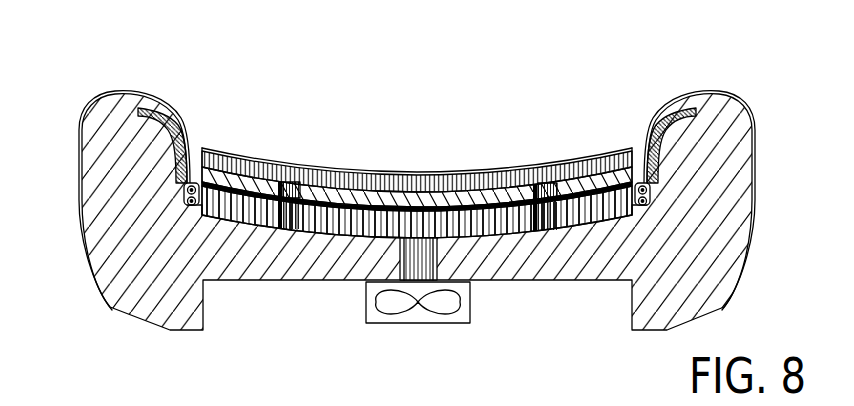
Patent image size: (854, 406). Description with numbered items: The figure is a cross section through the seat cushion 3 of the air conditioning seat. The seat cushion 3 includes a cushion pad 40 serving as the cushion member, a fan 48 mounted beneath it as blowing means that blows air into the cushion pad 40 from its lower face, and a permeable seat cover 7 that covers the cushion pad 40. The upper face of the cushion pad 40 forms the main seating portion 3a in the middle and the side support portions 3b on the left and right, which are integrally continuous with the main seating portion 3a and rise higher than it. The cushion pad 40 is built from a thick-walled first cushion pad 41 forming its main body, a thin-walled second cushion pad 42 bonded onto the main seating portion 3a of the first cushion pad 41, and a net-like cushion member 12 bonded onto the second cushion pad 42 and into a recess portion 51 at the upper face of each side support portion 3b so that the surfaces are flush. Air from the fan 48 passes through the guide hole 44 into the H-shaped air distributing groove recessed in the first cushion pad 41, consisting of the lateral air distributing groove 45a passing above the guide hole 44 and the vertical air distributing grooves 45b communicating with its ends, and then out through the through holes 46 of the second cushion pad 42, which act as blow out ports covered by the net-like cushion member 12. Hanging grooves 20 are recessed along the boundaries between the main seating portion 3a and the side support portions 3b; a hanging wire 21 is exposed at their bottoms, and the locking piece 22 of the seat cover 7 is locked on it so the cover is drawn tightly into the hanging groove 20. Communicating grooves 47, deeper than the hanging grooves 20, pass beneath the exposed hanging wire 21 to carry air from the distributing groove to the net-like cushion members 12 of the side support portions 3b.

The seat cushion 3 is at (422, 198).
The main seating portion 3a is at (485, 263).
The side support portion 3b is at (423, 157).
The seat cover 7 is at (192, 183).
The net-like cushion member 12 is at (153, 110).
The hanging groove 20 is at (183, 186).
The hanging wire 21 is at (200, 213).
The locking piece 22 is at (628, 212).
The cushion pad 40 is at (416, 205).
The first cushion pad 41 is at (352, 218).
The second cushion pad 42 is at (403, 202).
The guide hole 44 is at (398, 258).
The lateral air distributing groove 45a is at (503, 170).
The vertical air distributing groove 45b is at (462, 92).
The through hole 46 is at (287, 165).
The communicating groove 47 is at (257, 208).
The fan 48 is at (418, 317).
The recess portion 51 is at (110, 93).